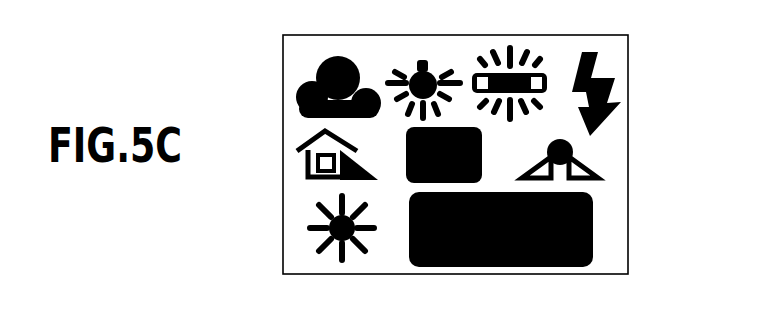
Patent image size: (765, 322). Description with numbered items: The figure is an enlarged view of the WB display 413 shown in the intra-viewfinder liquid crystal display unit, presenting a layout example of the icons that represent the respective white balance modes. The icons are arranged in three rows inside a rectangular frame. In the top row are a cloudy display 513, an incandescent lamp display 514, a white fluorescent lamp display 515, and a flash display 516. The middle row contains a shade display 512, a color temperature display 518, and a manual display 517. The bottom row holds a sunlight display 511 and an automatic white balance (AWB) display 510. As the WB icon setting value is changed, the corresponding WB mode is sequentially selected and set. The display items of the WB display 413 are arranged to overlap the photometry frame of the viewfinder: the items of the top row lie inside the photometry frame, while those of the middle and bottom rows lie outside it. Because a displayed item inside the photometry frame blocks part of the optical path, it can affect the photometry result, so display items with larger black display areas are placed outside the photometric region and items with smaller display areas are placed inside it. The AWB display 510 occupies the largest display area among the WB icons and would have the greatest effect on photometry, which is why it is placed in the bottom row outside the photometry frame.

The WB display 413 is at (290, 51).
The automatic white balance (AWB) display 510 is at (593, 228).
The sunlight display 511 is at (330, 232).
The shade display 512 is at (312, 162).
The cloudy display 513 is at (300, 103).
The incandescent lamp display 514 is at (437, 60).
The white fluorescent lamp display 515 is at (527, 70).
The flash display 516 is at (612, 92).
The manual display 517 is at (600, 164).
The color temperature display 518 is at (408, 130).